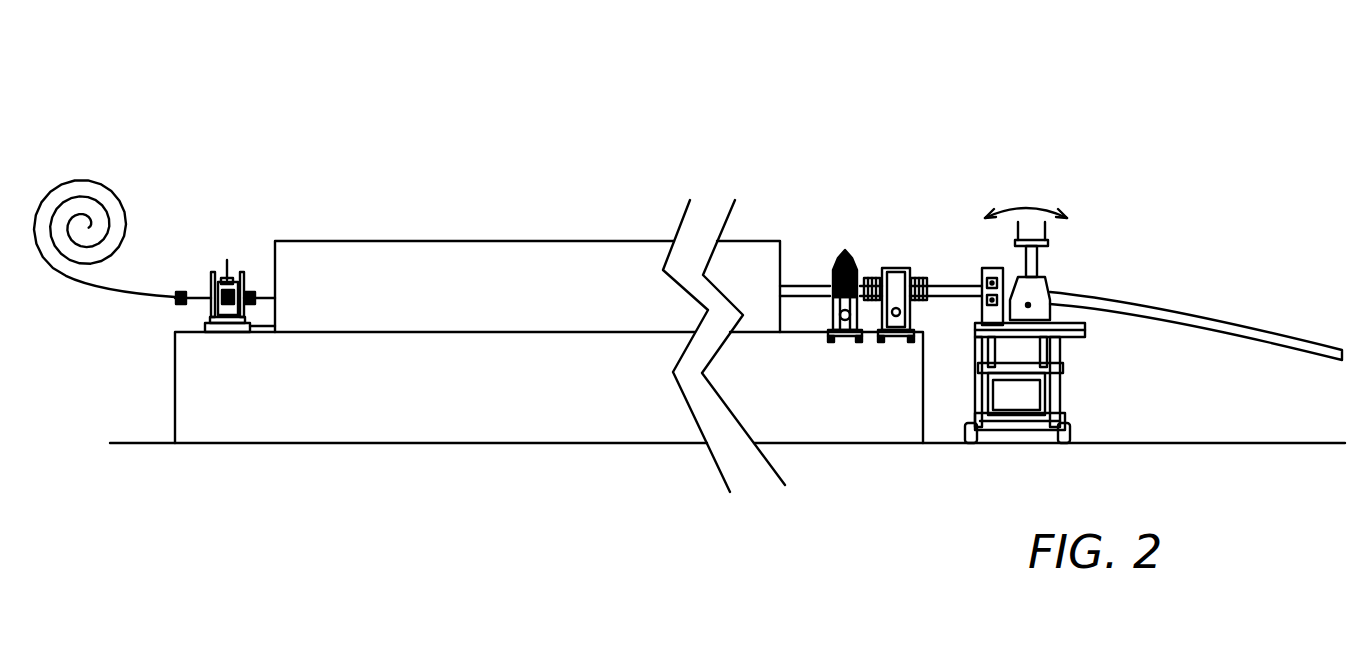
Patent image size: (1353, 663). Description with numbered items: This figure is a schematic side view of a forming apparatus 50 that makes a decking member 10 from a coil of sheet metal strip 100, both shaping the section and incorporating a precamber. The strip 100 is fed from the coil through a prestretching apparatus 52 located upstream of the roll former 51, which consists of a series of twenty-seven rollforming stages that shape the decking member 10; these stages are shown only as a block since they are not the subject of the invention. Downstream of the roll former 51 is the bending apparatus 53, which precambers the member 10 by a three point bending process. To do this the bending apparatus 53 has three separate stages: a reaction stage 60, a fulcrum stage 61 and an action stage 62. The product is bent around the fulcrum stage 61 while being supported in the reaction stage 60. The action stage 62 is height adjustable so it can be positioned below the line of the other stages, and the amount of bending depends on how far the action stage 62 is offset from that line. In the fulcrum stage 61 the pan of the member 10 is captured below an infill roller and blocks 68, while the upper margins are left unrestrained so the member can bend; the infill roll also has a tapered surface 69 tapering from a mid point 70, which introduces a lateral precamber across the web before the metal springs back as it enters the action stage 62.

The decking member 10 is at (797, 284).
The forming apparatus 50 is at (688, 121).
The roll former 51 is at (545, 247).
The prestretching apparatus 52 is at (235, 242).
The bending apparatus 53 is at (1083, 170).
The reaction stage 60 is at (848, 220).
The fulcrum stage 61 is at (903, 235).
The action stage 62 is at (1153, 273).
The blocks 68 is at (1035, 313).
The tapered surface 69 is at (1045, 405).
The mid point 70 is at (1022, 253).
The sheet metal strip 100 is at (150, 252).